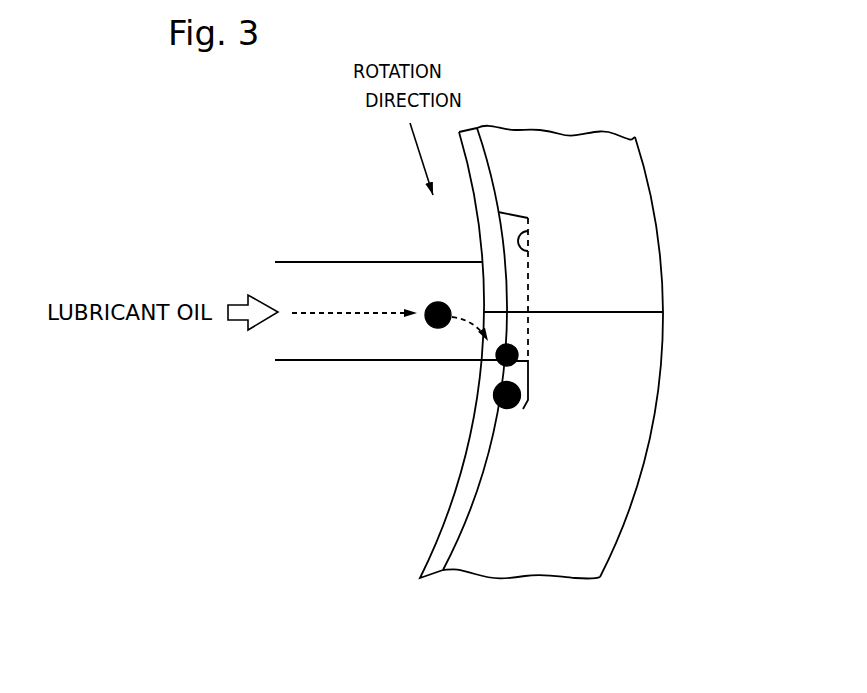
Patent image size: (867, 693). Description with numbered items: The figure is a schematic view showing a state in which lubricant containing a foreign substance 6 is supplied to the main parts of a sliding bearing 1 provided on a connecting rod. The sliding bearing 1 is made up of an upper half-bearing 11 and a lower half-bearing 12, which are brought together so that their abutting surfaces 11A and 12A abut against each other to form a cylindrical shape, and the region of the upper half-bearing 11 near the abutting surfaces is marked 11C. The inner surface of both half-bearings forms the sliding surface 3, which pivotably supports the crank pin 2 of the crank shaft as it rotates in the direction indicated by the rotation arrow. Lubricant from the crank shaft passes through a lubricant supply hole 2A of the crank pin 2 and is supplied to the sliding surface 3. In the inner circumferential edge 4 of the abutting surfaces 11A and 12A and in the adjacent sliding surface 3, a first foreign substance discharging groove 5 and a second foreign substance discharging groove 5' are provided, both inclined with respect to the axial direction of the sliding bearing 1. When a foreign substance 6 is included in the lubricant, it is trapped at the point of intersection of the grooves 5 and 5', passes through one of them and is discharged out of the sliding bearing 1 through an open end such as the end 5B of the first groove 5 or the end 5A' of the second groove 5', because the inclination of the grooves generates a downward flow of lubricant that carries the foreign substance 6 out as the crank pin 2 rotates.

The sliding bearing 1 is at (653, 147).
The crank pin 2 is at (418, 535).
The lubricant supply hole 2A is at (328, 262).
The sliding surface 3 is at (468, 506).
The inner circumferential edge 4 is at (521, 332).
The first foreign substance discharging groove 5 is at (516, 435).
The second foreign substance discharging groove 5' is at (524, 193).
The upstream end of second foreign substance discharging groove 5A' is at (551, 249).
The downstream end of first foreign substance discharging groove 5B is at (527, 407).
The foreign substance 6 is at (500, 362).
The upper half-bearing 11 is at (617, 207).
The abutting surface of upper half-bearing 11A is at (602, 312).
The outer ring shoulder 11C is at (633, 248).
The lower half-bearing 12 is at (600, 500).
The abutting surface of lower half-bearing 12A is at (637, 312).